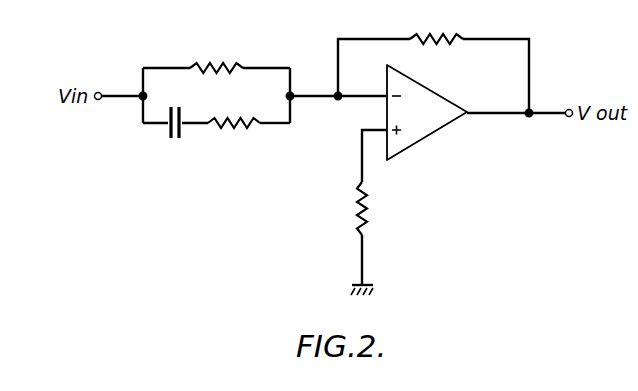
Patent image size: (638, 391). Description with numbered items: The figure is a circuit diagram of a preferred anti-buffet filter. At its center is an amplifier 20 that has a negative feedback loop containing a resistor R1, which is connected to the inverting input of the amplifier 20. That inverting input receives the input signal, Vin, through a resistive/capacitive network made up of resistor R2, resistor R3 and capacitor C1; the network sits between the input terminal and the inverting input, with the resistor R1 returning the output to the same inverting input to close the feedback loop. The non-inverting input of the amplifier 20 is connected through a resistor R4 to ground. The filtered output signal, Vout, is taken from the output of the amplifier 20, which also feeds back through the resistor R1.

The amplifier 20 is at (433, 130).
The resistor R1 is at (433, 62).
The resistor R2 is at (216, 55).
The resistor R3 is at (249, 139).
The resistor R4 is at (373, 212).
The capacitor C1 is at (175, 128).